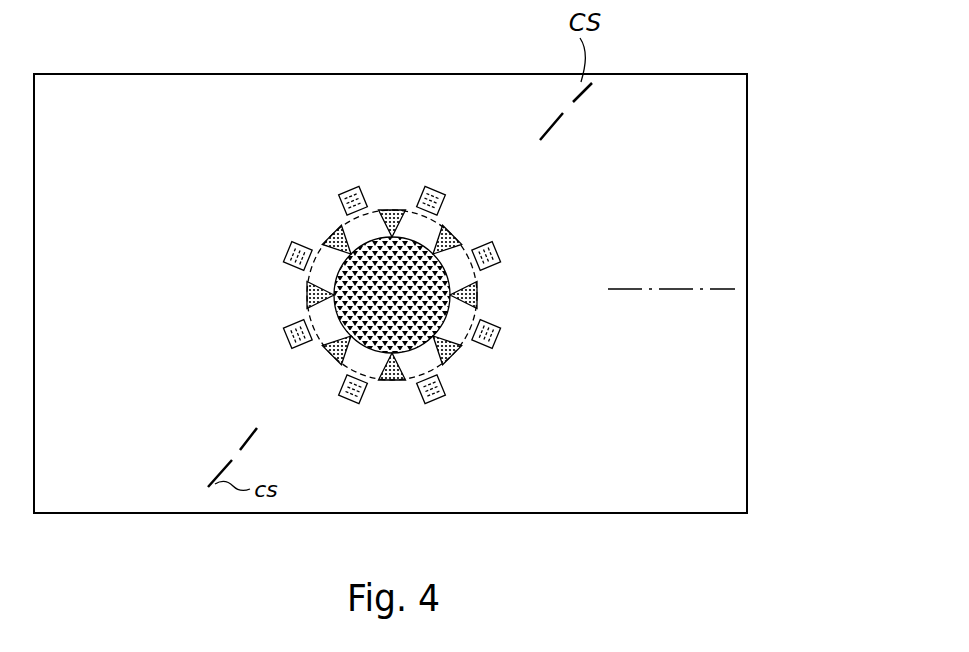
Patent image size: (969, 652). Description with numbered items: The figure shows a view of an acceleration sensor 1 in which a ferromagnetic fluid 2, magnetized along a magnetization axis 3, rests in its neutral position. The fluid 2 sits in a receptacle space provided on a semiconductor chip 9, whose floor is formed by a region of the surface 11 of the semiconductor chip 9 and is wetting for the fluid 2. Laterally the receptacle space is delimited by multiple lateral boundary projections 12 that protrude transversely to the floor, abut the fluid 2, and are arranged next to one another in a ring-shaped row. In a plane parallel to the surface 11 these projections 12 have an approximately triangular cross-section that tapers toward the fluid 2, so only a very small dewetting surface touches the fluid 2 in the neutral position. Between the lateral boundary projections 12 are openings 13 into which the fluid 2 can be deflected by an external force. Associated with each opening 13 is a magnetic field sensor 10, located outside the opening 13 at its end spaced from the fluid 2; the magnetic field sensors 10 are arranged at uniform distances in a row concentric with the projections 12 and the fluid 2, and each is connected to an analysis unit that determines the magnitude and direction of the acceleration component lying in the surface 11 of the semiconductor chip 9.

The acceleration sensor 1 is at (614, 562).
The ferromagnetic fluid 2 is at (408, 240).
The magnetization axis 3 is at (678, 290).
The semiconductor chip 9 is at (107, 493).
The magnetic field sensor 10 is at (346, 191).
The surface 11 is at (700, 475).
The lateral boundary projection 12 is at (337, 234).
The opening 13 is at (338, 220).